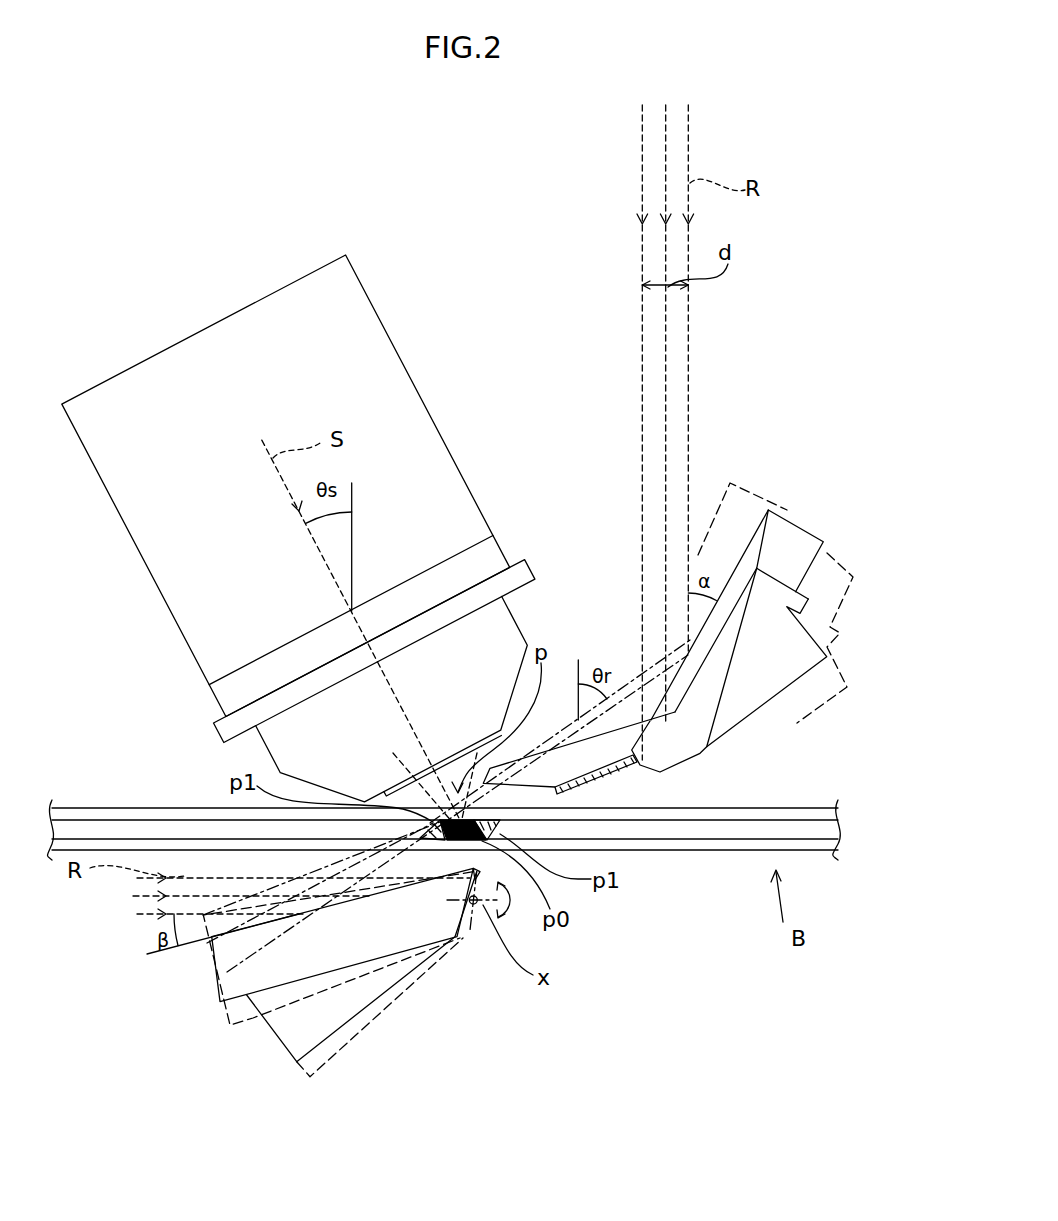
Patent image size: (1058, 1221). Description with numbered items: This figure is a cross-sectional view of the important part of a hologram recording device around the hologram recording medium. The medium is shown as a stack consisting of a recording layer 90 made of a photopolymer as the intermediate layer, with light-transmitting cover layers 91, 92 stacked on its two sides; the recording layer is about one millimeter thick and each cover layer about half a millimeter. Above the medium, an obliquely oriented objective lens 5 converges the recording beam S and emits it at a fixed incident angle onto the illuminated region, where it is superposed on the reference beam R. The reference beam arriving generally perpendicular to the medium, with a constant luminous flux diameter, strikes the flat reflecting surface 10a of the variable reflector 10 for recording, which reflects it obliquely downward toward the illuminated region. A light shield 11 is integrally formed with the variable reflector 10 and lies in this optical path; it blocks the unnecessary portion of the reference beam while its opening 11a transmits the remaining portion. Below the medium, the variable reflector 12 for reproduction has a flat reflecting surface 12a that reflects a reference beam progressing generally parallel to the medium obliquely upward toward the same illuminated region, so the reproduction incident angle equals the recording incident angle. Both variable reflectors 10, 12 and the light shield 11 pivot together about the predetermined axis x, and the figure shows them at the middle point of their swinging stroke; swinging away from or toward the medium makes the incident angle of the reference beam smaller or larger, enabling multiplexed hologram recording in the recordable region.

The objective lens 5 is at (160, 592).
The variable reflector for recording 10 is at (812, 540).
The reflecting surface 10a is at (755, 537).
The light shield 11 is at (627, 780).
The opening 11a is at (617, 772).
The variable reflector for reproduction 12 is at (308, 961).
The reflecting surface 12a is at (230, 930).
The recording layer 90 is at (838, 830).
The cover layer 91 is at (838, 812).
The cover layer 92 is at (838, 846).